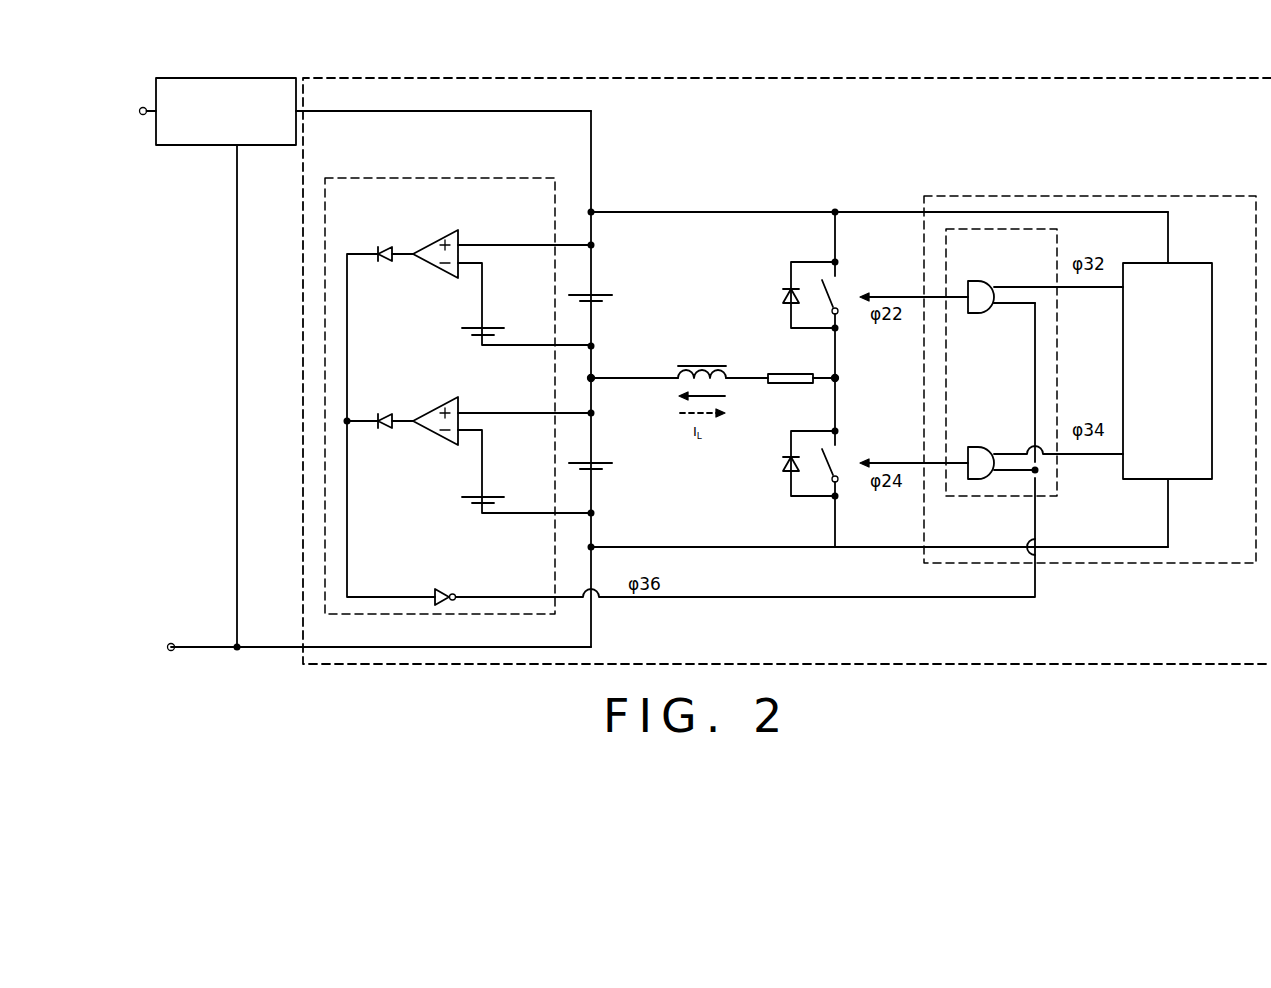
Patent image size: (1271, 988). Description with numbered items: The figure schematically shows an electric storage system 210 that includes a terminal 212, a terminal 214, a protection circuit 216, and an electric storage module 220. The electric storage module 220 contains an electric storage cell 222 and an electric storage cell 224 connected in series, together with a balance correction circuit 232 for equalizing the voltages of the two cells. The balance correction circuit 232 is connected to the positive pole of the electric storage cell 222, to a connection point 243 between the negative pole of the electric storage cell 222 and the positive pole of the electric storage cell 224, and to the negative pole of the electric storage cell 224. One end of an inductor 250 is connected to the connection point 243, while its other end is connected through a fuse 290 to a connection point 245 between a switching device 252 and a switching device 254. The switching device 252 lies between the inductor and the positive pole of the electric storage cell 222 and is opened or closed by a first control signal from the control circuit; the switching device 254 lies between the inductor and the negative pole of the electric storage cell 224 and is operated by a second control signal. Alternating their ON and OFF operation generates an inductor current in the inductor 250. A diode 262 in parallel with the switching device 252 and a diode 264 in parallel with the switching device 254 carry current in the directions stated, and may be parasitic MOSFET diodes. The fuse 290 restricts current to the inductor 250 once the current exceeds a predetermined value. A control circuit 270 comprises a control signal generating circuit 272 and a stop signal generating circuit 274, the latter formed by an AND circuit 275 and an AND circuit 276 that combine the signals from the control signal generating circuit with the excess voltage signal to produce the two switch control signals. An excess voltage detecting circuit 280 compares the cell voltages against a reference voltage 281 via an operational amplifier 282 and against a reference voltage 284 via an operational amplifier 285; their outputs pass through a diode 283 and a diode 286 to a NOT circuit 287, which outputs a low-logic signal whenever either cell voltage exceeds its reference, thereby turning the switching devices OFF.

The electric storage system 210 is at (135, 29).
The terminal 212 is at (139, 114).
The terminal 214 is at (170, 644).
The protection circuit 216 is at (236, 64).
The electric storage module 220 is at (1068, 78).
The electric storage cell 222 is at (595, 290).
The electric storage cell 224 is at (595, 458).
The balance correction circuit 232 is at (931, 161).
The connection point 243 is at (614, 362).
The connection point 245 is at (866, 359).
The inductor 250 is at (702, 358).
The switching device 252 is at (845, 288).
The switching device 254 is at (845, 456).
The diode 262 is at (781, 283).
The diode 264 is at (781, 483).
The control circuit 270 is at (1134, 196).
The control signal generating circuit 272 is at (1203, 263).
The stop signal generating circuit 274 is at (955, 498).
The AND circuit 275 is at (978, 279).
The AND circuit 276 is at (978, 446).
The excess voltage detecting circuit 280 is at (512, 178).
The reference voltage 281 is at (512, 311).
The operational amplifier 282 is at (458, 230).
The diode 283 is at (386, 252).
The reference voltage 284 is at (512, 479).
The operational amplifier 285 is at (458, 398).
The diode 286 is at (386, 419).
The NOT circuit 287 is at (440, 592).
The fuse 290 is at (780, 392).